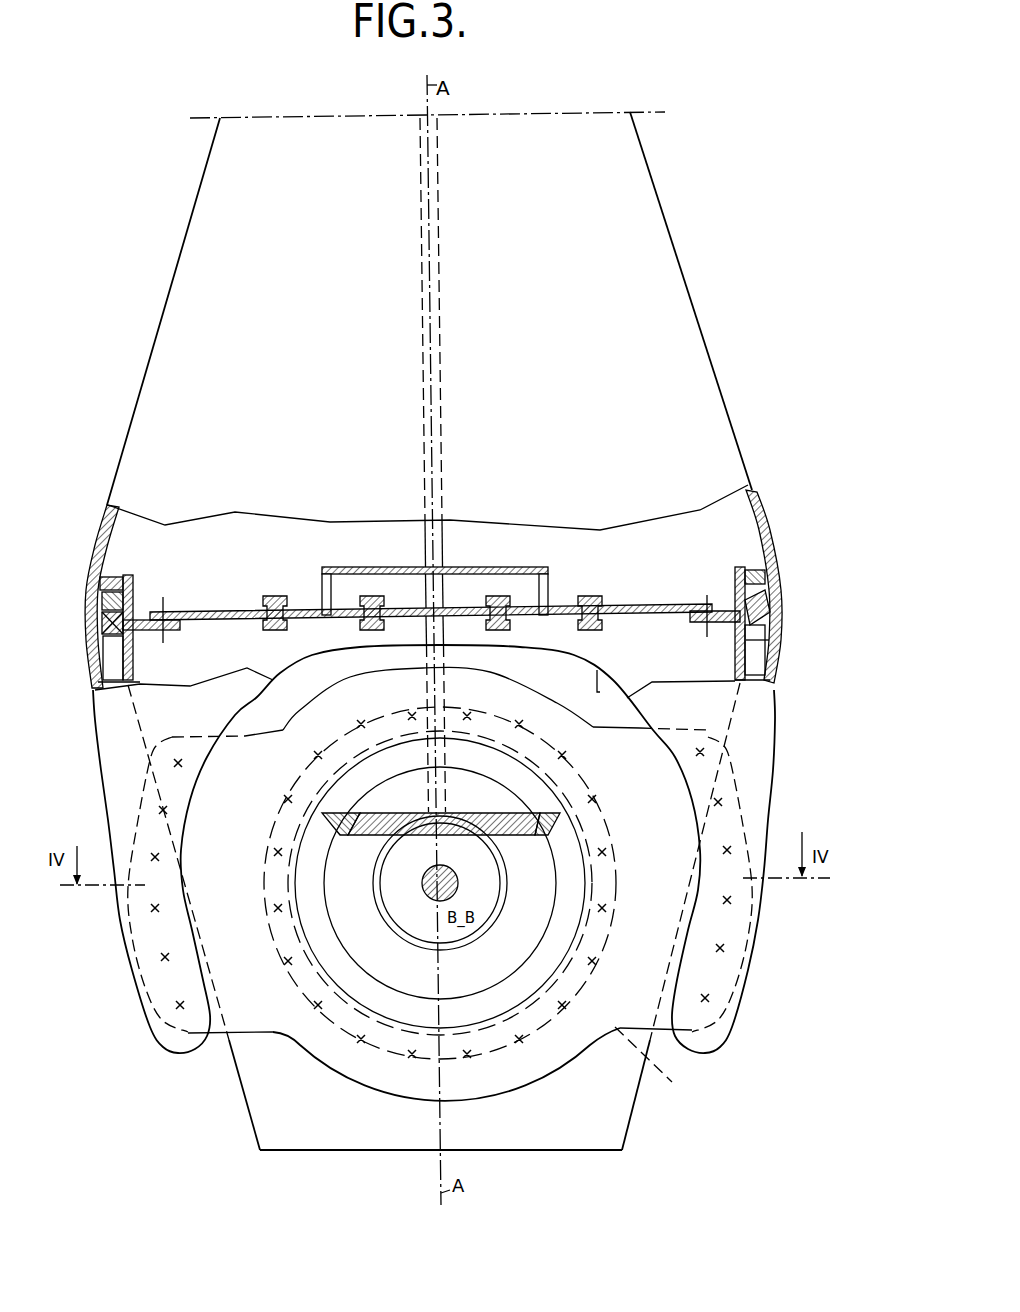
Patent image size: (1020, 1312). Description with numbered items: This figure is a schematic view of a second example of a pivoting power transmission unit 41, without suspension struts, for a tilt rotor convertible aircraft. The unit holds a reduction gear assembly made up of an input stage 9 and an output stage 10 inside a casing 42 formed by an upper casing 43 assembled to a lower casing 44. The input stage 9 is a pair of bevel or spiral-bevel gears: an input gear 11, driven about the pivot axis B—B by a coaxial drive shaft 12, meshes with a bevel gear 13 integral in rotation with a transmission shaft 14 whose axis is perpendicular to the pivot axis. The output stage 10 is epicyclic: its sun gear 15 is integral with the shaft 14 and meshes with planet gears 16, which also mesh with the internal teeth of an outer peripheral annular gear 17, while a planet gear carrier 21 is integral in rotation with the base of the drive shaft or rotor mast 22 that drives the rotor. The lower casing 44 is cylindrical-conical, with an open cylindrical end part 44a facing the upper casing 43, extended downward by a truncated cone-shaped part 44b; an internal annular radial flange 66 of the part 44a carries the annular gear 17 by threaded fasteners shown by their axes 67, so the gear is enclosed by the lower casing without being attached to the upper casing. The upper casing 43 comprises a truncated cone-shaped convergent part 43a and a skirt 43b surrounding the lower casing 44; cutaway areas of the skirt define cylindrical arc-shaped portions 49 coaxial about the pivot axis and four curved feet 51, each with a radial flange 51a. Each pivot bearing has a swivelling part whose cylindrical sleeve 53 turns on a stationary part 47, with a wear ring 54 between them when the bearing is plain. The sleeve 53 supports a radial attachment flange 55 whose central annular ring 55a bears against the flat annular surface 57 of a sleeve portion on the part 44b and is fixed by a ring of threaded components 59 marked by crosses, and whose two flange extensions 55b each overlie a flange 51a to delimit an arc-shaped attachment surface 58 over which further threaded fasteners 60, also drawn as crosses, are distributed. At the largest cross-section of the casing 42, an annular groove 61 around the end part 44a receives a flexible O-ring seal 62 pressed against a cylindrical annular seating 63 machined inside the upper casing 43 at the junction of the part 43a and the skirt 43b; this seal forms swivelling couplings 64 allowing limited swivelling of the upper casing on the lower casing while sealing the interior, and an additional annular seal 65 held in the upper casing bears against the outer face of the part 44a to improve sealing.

The input stage 9 is at (370, 845).
The output stage 10 is at (405, 537).
The input gear 11 is at (483, 888).
The drive shaft 12 is at (422, 882).
The bevel gear 13 is at (560, 817).
The transmission shaft 14 is at (433, 630).
The sun gear 15 is at (452, 612).
The planet gears 16 is at (567, 605).
The outer peripheral annular gear 17 is at (647, 604).
The planet gear carrier 21 is at (380, 567).
The drive shaft 22 is at (437, 270).
The pivoting transmission unit 41 is at (140, 245).
The casing 42 is at (467, 321).
The upper casing 43 is at (461, 400).
The truncated cone-shaped part 43a is at (658, 198).
The skirt 43b is at (760, 768).
The lower casing 44 is at (447, 922).
The open cylindrical end part 44a is at (750, 638).
The truncated cone-shaped part 44b is at (633, 1100).
The stationary part 47 is at (351, 972).
The wear ring 54 is at (444, 824).
The cylindrical arc-shaped portions 49 is at (598, 692).
The feet 51 is at (447, 918).
The radial flange 51a is at (182, 1050).
The cylindrical sleeve 53 is at (565, 890).
The radial flange 55 is at (465, 975).
The central annular ring 55a is at (522, 1072).
The flange extensions 55b is at (233, 780).
The flat annular surface 57 is at (655, 1060).
The attachment surface 58 is at (142, 822).
The threaded components 59 is at (545, 757).
The threaded fasteners 60 is at (163, 957).
The annular groove 61 is at (97, 598).
The flexible peripheral seal 62 is at (103, 628).
The cylindrical annular seating 63 is at (100, 663).
The swivelling couplings 64 is at (793, 588).
The annular seal 65 is at (773, 566).
The internal annular radial flange 66 is at (125, 658).
The axes 67 is at (162, 608).